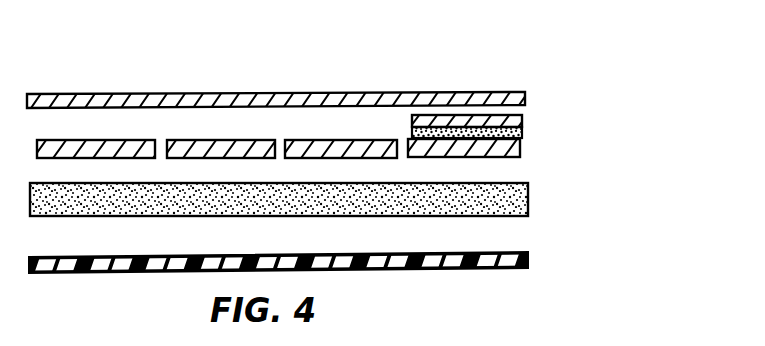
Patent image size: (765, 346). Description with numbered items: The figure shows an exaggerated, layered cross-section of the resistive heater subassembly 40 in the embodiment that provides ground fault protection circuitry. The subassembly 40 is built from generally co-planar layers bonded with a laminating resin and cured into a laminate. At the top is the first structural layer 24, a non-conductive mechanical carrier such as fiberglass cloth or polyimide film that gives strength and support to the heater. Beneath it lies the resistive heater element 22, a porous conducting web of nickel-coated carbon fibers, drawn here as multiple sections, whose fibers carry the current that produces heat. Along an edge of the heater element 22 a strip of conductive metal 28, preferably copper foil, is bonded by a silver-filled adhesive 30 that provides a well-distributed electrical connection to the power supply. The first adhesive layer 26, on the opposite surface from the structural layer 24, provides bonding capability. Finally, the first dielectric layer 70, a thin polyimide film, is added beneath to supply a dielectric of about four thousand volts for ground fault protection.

The resistive heater subassembly 40 is at (275, 80).
The first structural layer 24 is at (525, 94).
The strip of conductive metal 28 is at (522, 121).
The silver-filled adhesive 30 is at (522, 131).
The resistive heater element 22 is at (520, 149).
The first adhesive layer 26 is at (528, 199).
The first dielectric layer 70 is at (528, 260).